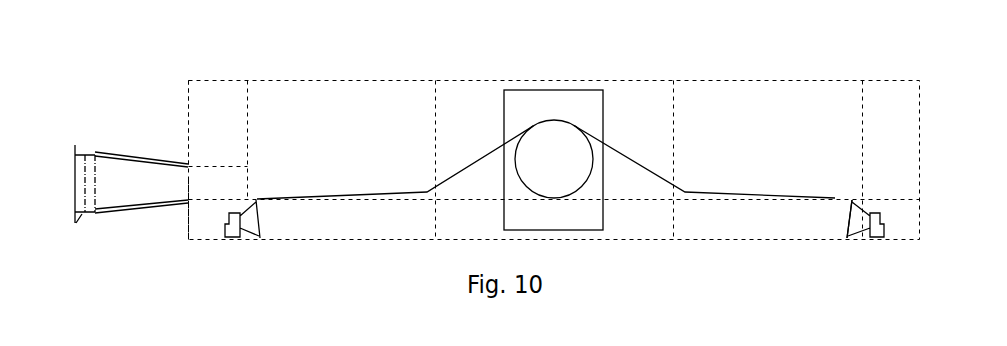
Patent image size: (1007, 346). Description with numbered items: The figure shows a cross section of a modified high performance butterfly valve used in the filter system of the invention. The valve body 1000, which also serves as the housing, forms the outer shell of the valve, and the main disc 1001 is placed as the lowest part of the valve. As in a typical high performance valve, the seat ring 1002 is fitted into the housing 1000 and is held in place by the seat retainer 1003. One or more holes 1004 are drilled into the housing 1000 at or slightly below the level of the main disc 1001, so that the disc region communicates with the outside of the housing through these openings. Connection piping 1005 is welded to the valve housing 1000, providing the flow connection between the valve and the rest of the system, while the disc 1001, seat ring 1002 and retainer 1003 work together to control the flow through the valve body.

The valve body 1000 is at (212, 79).
The main disc 1001 is at (425, 190).
The seat ring 1002 is at (853, 212).
The seat retainer 1003 is at (865, 240).
The holes 1004 is at (218, 166).
The connection piping 1005 is at (95, 155).